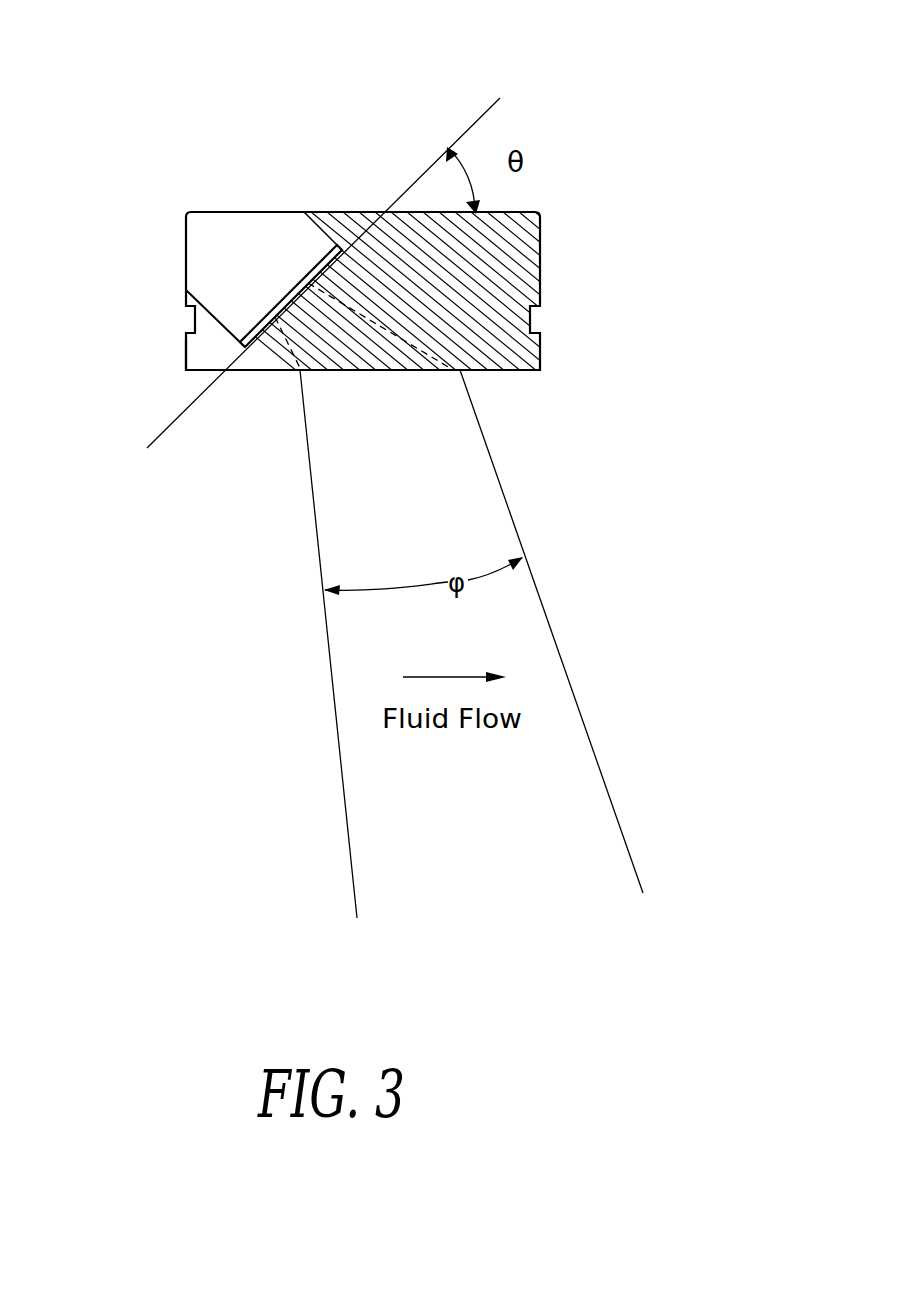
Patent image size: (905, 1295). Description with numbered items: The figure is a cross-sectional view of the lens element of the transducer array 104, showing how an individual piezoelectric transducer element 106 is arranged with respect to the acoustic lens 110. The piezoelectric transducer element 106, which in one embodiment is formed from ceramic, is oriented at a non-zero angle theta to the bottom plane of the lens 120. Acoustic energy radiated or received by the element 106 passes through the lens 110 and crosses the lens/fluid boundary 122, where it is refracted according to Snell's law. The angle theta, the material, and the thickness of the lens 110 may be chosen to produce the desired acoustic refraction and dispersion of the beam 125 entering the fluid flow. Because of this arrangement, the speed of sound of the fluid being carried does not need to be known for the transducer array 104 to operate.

The transducer array 104 is at (547, 182).
The piezoelectric transducer element 106 is at (301, 271).
The acoustic lens 110 is at (270, 370).
The bottom plane of the lens 120 is at (503, 370).
The lens/fluid boundary 122 is at (188, 370).
The beam 125 is at (340, 767).